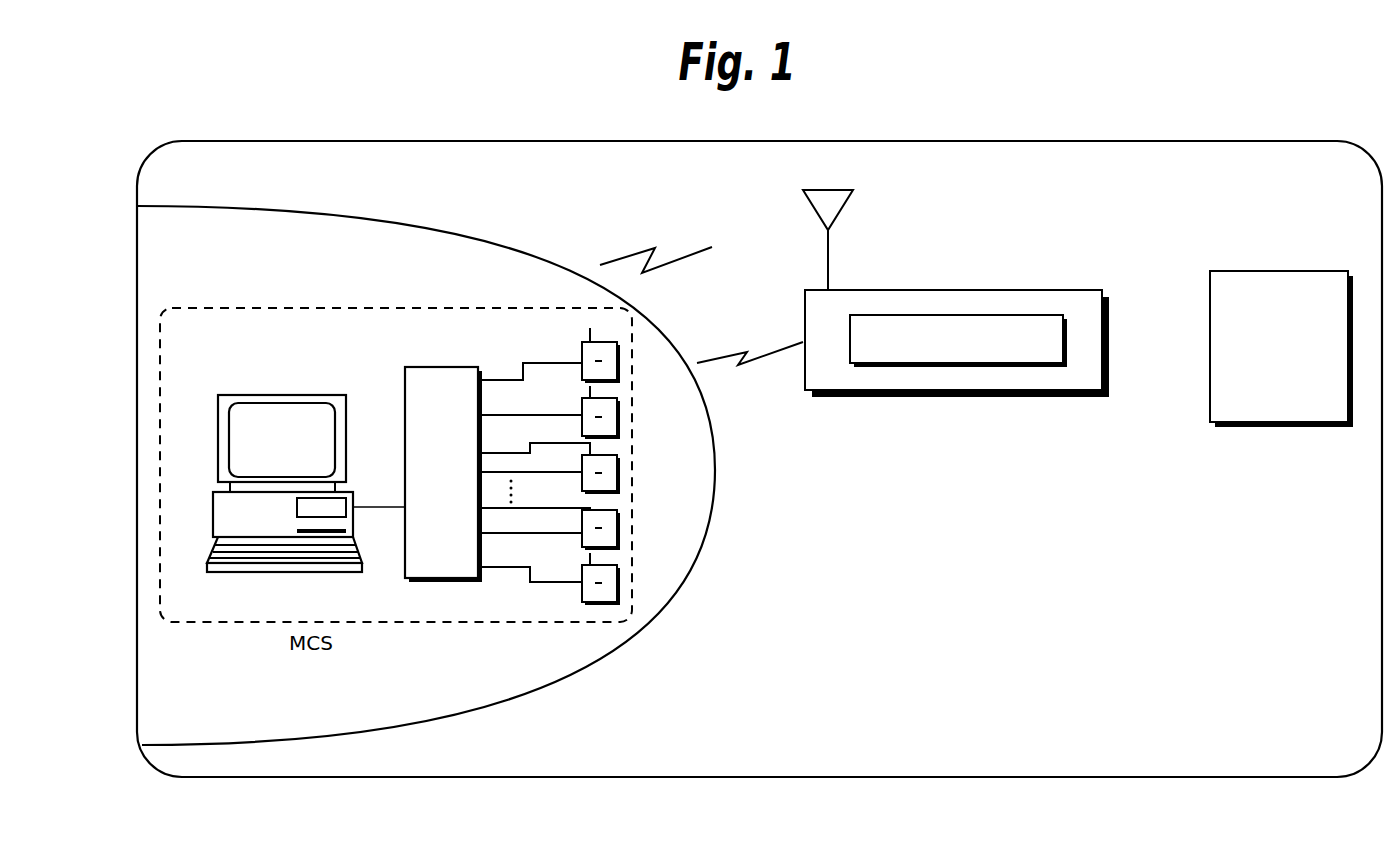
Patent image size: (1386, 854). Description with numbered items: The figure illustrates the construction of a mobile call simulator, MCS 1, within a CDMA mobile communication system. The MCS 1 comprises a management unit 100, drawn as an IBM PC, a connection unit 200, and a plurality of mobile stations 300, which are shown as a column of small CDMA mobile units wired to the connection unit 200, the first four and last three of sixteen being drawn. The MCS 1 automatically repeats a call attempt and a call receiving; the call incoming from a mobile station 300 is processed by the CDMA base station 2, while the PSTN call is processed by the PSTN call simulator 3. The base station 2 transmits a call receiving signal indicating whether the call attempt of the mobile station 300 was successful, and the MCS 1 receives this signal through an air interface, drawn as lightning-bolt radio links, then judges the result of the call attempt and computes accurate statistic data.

The mobile call simulator (MCS) 1 is at (423, 627).
The management unit 100 is at (286, 395).
The connection unit 200 is at (462, 367).
The mobile station 300 is at (637, 347).
The base station 2 is at (997, 400).
The PSTN call simulator 3 is at (1295, 428).